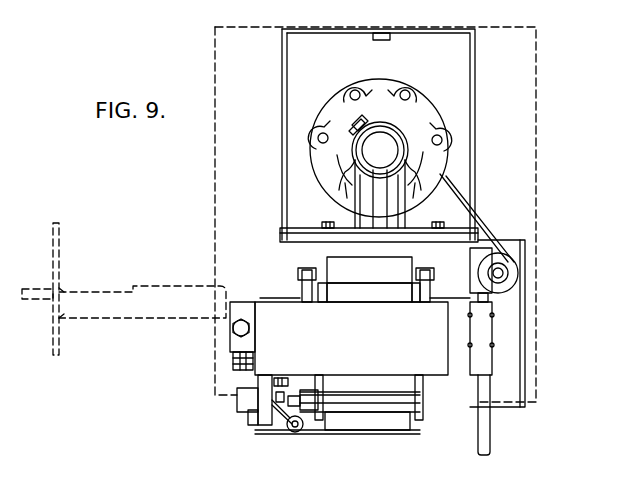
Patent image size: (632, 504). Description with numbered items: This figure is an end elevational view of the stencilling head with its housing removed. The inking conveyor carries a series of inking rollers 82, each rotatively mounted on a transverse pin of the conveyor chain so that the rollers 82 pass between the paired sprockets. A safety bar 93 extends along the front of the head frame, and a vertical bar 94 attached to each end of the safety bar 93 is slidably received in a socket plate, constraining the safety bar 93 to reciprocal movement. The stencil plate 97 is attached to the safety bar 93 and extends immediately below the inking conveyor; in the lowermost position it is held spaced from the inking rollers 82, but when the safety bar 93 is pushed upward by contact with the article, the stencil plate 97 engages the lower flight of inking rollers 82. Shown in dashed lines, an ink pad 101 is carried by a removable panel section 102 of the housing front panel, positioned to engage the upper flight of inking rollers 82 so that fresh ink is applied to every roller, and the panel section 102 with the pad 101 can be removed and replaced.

The inking roller 82 is at (373, 418).
The safety bar 93 is at (258, 426).
The vertical bar 94 is at (262, 398).
The stencil plate 97 is at (304, 432).
The ink pad 101 is at (149, 284).
The removable panel section 102 is at (53, 240).